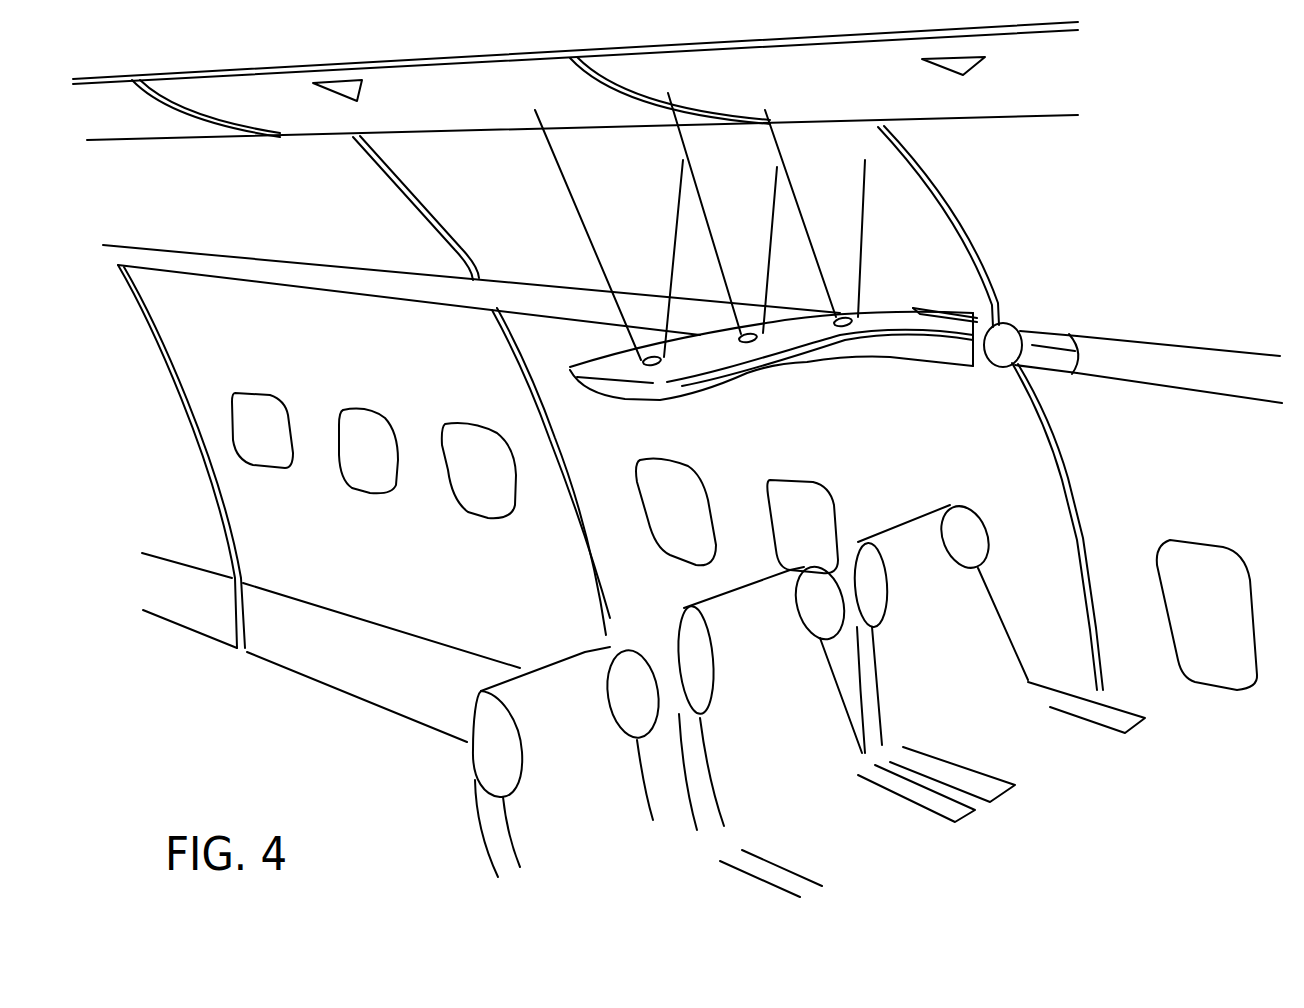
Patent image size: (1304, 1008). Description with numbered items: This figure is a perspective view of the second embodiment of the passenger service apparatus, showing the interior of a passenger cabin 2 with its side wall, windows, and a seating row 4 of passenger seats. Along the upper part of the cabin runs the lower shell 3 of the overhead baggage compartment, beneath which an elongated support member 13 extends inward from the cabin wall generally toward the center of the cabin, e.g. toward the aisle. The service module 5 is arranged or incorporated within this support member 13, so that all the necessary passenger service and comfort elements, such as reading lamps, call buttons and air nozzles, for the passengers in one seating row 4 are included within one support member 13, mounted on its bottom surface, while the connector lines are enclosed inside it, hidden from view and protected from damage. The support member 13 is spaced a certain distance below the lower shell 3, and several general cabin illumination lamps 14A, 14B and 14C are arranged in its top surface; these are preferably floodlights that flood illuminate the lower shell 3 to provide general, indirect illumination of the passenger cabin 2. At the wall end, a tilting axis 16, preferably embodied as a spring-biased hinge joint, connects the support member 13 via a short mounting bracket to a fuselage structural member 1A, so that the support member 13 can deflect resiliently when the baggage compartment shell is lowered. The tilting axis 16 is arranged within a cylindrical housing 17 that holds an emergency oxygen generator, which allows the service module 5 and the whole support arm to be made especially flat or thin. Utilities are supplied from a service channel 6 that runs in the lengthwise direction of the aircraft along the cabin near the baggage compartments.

The fuselage structural member 1A is at (1052, 330).
The passenger cabin 2 is at (1082, 178).
The lower shell of the baggage compartment 3 is at (993, 87).
The seating row 4 is at (530, 817).
The service module 5 is at (657, 400).
The service channel 6 is at (1172, 343).
The support member 13 is at (972, 322).
The general cabin illumination lamp 14A is at (656, 365).
The general cabin illumination lamp 14B is at (750, 342).
The general cabin illumination lamp 14C is at (846, 326).
The tilting axis 16 is at (1004, 345).
The cylindrical housing 17 is at (1003, 366).